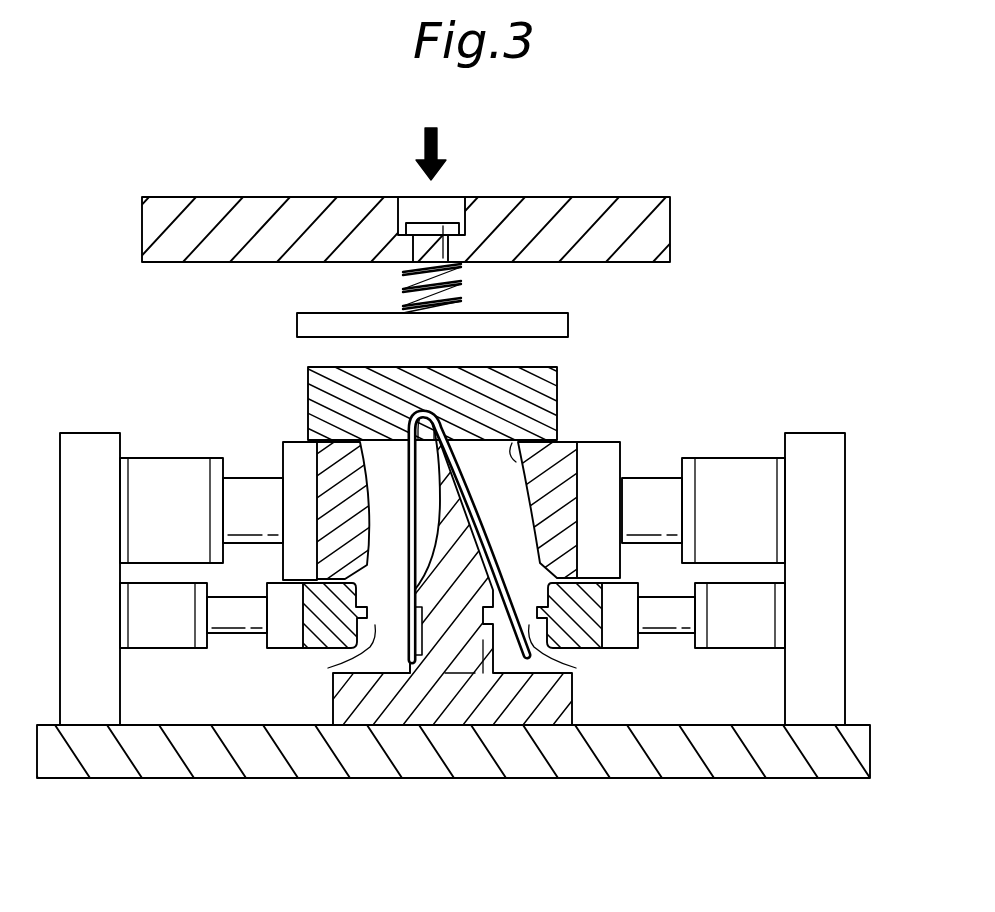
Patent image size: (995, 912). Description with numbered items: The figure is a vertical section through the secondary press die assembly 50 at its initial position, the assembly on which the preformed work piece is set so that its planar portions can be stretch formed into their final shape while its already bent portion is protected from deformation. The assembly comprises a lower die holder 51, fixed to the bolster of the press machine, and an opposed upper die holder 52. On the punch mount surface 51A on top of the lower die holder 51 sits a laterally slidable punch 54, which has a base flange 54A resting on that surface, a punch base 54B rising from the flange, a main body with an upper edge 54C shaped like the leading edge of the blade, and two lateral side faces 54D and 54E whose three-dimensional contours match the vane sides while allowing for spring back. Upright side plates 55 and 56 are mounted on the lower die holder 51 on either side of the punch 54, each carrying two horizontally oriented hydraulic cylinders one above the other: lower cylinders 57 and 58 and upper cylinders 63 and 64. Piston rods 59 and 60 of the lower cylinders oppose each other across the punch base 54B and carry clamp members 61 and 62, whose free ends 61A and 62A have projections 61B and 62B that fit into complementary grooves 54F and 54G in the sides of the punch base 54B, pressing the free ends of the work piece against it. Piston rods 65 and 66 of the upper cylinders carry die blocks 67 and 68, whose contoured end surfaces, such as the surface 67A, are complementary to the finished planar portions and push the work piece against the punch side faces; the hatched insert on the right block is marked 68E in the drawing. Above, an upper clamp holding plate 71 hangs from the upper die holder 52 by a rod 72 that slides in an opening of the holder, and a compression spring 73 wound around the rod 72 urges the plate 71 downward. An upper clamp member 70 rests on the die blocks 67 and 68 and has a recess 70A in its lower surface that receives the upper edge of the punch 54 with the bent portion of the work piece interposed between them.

The secondary press die assembly 50 is at (130, 380).
The lower die holder 51 is at (840, 754).
The punch mount surface 51A is at (162, 725).
The upper die holder 52 is at (650, 236).
The punch 54 is at (468, 575).
The base flange 54A is at (556, 706).
The punch base 54B is at (457, 632).
The upper edge 54C is at (375, 455).
The lateral side face 54D is at (333, 367).
The lateral side face 54E is at (512, 395).
The groove 54F is at (424, 636).
The groove 54G is at (504, 636).
The upright side plate 55 is at (87, 445).
The upright side plate 56 is at (815, 443).
The hydraulic cylinder 57 is at (140, 626).
The hydraulic cylinder 58 is at (762, 624).
The piston rod 59 is at (230, 621).
The piston rod 60 is at (668, 623).
The clamp member 61 is at (317, 602).
The free end 61A is at (364, 623).
The projection 61B is at (328, 668).
The clamp member 62 is at (588, 602).
The free end 62A is at (540, 623).
The projection 62B is at (576, 668).
The hydraulic cylinder 63 is at (140, 485).
The hydraulic cylinder 64 is at (764, 485).
The piston rod 65 is at (250, 486).
The piston rod 66 is at (655, 487).
The die block 67 is at (267, 450).
The contoured end surface 67A is at (322, 418).
The die block 68 is at (565, 477).
The upper right clamp insert 68E is at (548, 414).
The upper clamp member 70 is at (543, 388).
The recess 70A is at (466, 445).
The upper clamp holding plate 71 is at (535, 324).
The rod 72 is at (435, 230).
The compression spring 73 is at (403, 274).